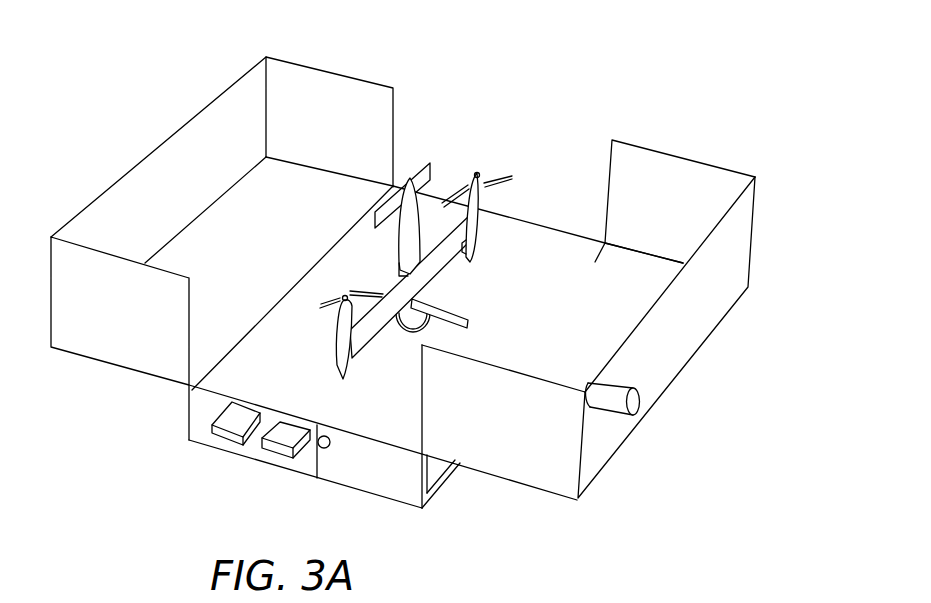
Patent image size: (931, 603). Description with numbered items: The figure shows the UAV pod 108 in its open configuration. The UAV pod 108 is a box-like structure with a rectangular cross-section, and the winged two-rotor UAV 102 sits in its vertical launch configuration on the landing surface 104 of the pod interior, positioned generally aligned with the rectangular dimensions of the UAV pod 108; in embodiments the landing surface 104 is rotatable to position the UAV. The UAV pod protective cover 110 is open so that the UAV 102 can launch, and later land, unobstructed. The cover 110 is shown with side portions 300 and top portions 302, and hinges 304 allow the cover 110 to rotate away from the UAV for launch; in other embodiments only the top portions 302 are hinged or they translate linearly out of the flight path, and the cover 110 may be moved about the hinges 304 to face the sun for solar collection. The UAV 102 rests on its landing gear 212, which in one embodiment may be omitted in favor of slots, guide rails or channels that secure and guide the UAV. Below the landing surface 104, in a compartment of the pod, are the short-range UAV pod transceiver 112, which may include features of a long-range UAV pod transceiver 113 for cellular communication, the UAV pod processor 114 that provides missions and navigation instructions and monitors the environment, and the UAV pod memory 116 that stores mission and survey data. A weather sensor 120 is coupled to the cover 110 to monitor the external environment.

The UAV 102 is at (410, 165).
The landing surface 104 is at (517, 232).
The UAV pod 108 is at (641, 100).
The UAV pod protective cover 110 is at (760, 247).
The short-range UAV pod transceiver 112 is at (209, 449).
The long-range UAV pod transceiver 113 is at (222, 437).
The UAV pod processor 114 is at (270, 476).
The UAV pod memory 116 is at (287, 458).
The weather sensor 120 is at (640, 404).
The landing gear 212 is at (470, 322).
The side portions 300 is at (312, 86).
The top portions 302 is at (164, 163).
The hinges 304 is at (593, 262).